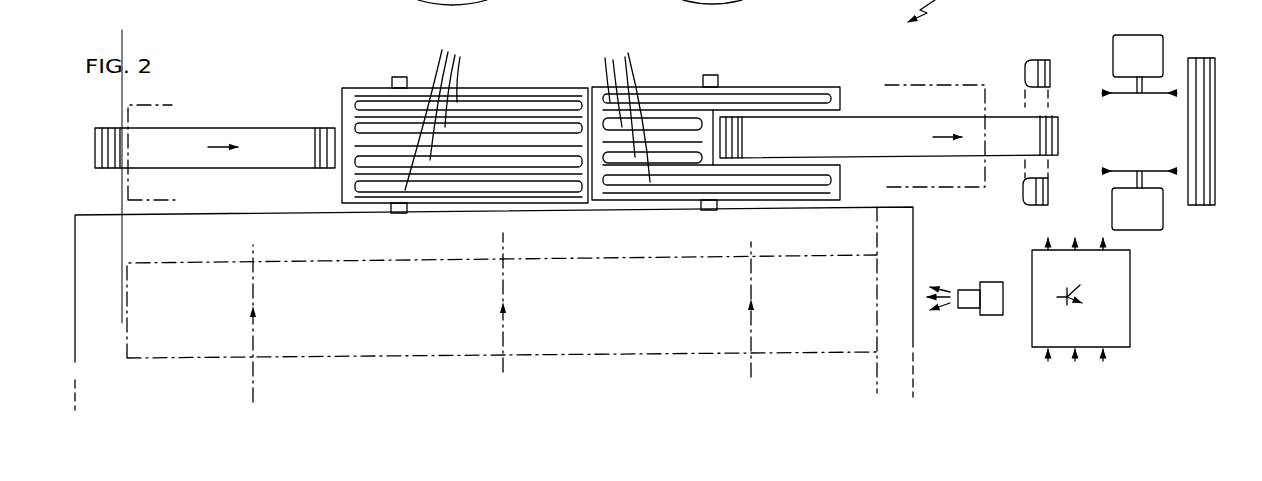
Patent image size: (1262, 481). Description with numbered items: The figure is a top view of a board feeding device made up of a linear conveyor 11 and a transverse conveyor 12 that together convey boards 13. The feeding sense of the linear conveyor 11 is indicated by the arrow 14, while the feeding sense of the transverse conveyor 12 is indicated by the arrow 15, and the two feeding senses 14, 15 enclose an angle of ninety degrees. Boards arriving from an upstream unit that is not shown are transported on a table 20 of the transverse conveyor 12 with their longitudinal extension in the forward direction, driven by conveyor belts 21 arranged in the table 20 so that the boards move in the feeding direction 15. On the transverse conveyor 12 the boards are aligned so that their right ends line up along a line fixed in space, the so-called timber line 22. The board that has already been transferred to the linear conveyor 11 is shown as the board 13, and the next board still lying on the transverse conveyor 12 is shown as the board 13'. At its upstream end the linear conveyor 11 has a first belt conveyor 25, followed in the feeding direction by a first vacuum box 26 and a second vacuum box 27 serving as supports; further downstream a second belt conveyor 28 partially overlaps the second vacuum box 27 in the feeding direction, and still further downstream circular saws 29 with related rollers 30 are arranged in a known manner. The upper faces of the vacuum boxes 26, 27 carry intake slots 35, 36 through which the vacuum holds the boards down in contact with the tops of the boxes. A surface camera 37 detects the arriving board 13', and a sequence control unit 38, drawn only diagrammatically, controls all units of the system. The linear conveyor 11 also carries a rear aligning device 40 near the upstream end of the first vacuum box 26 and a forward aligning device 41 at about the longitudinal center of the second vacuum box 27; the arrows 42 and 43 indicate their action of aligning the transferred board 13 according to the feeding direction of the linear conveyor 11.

The linear conveyor 11 is at (581, 113).
The transverse conveyor 12 is at (945, 231).
The board 13 is at (562, 124).
The next board 13' is at (502, 326).
The feeding sense of the linear conveyor 14 is at (937, 135).
The feeding sense of the transverse conveyor 15 is at (753, 305).
The table 20 is at (201, 238).
The conveyor belts 21 is at (255, 383).
The timber line 22 is at (877, 372).
The first belt conveyor 25 is at (206, 127).
The first vacuum box 26 is at (517, 86).
The second vacuum box 27 is at (662, 86).
The second belt conveyor 28 is at (852, 125).
The circular saws 29 is at (1123, 95).
The rollers 30 is at (1030, 60).
The intake slots 35 is at (440, 109).
The intake slots 36 is at (621, 109).
The surface camera 37 is at (991, 312).
The sequence control unit 38 is at (1130, 300).
The rear aligning device 40 is at (388, 77).
The forward aligning device 41 is at (718, 80).
The arrow 42 is at (400, 74).
The arrow 43 is at (713, 72).